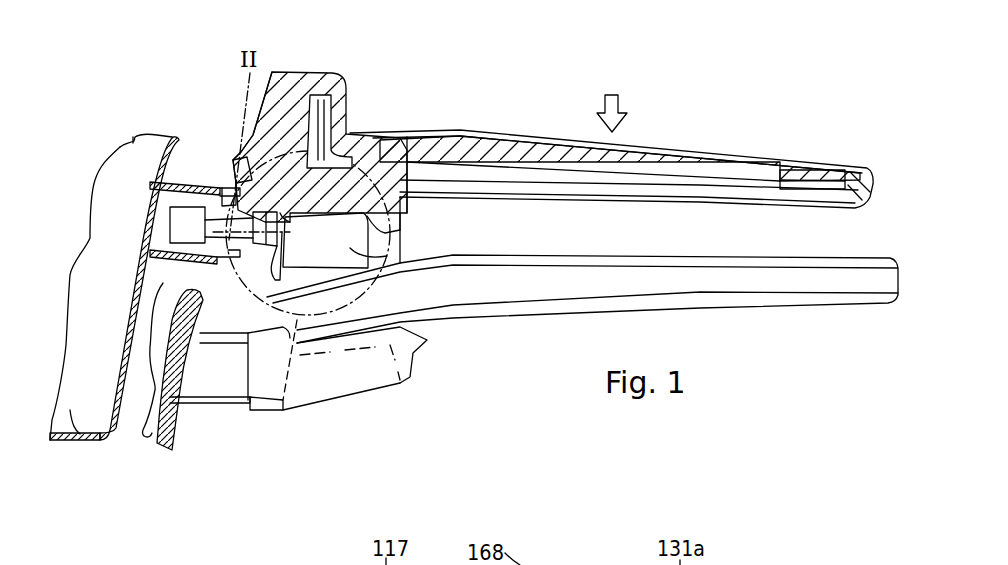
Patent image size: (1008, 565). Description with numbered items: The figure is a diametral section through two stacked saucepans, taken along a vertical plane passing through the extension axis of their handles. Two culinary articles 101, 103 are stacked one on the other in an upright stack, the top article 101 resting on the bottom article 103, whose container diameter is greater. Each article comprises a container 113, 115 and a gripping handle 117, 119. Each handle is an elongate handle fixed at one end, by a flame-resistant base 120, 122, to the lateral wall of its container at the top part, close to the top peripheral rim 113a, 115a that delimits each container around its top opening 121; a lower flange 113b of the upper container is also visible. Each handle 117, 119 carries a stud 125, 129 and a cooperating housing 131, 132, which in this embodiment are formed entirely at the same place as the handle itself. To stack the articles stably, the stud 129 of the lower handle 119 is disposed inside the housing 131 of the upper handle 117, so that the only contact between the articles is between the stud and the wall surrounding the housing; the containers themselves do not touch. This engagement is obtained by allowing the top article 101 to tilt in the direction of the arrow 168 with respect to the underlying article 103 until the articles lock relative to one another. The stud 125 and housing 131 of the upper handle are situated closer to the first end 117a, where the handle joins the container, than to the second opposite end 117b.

The culinary article 101 is at (90, 197).
The culinary article 103 is at (180, 425).
The container 113 is at (70, 413).
The top peripheral rim 113a is at (173, 137).
The panel lower flange 113b is at (100, 443).
The container 115 is at (145, 427).
The top peripheral rim 115a is at (205, 292).
The gripping handle 117 is at (517, 134).
The first end 117a is at (210, 183).
The second opposite end 117b is at (862, 170).
The gripping handle 119 is at (603, 256).
The flame-resistant base 120 is at (170, 183).
The top opening 121 is at (133, 137).
The flame-resistant base 122 is at (227, 407).
The stud 125 is at (337, 78).
The stud 129 is at (353, 250).
The housing 131 is at (280, 233).
The housing 132 is at (340, 370).
The arrow 168 is at (620, 97).